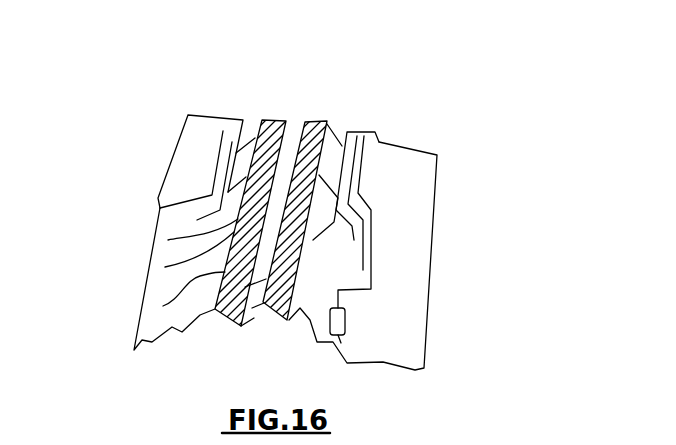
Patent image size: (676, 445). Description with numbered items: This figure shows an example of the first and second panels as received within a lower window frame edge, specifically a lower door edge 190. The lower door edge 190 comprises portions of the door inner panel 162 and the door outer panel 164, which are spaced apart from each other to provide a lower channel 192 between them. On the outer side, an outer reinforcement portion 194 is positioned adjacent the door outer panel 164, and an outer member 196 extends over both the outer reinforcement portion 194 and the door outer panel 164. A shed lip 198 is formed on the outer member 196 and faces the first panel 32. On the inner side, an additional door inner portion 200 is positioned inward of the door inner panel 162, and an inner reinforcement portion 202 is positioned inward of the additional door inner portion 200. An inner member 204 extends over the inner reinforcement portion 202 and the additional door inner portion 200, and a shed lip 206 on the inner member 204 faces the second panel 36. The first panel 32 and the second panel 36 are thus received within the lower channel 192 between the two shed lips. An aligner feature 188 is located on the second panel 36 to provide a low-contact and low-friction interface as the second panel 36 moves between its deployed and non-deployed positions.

The first panel 32 is at (163, 306).
The second panel 36 is at (232, 327).
The door inner panel 162 is at (439, 209).
The door outer panel 164 is at (159, 211).
The aligner feature 188 is at (165, 267).
The lower door edge 190 is at (338, 92).
The lower channel 192 is at (253, 119).
The outer reinforcement portion 194 is at (180, 230).
The outer member 196 is at (178, 139).
The shed lip 198 is at (274, 119).
The additional door inner portion 200 is at (362, 187).
The inner reinforcement portion 202 is at (360, 223).
The inner member 204 is at (377, 141).
The shed lip 206 is at (311, 220).